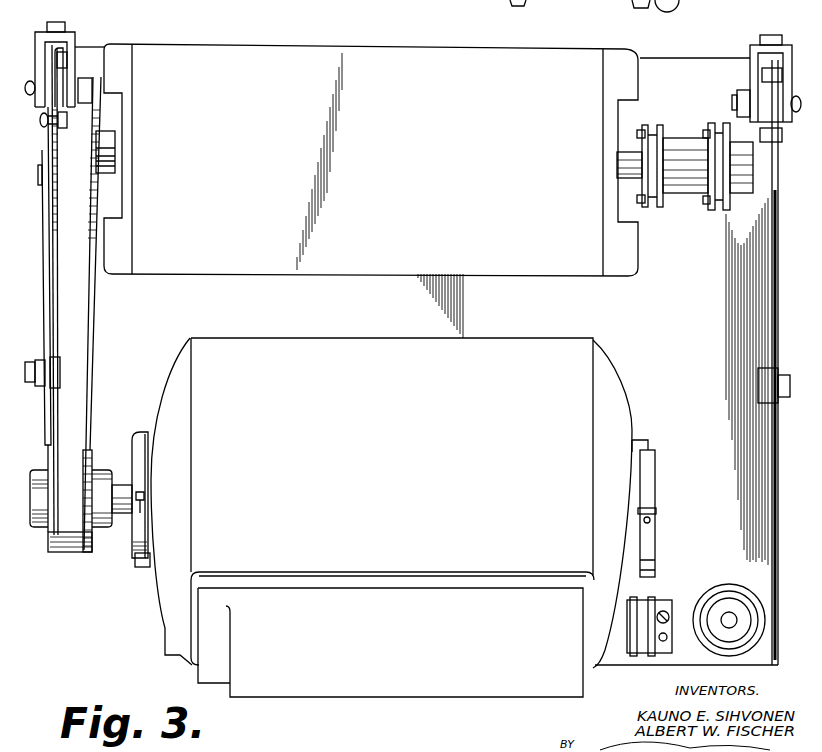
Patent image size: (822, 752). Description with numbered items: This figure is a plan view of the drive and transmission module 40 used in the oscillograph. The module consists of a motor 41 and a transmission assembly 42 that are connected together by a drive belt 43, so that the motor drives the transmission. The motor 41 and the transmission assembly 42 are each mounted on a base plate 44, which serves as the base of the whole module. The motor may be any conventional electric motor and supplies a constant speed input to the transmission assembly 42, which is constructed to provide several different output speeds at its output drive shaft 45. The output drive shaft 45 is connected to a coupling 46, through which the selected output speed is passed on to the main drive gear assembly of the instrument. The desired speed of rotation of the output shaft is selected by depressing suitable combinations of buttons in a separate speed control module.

The drive and transmission module 40 is at (658, 50).
The motor 41 is at (551, 403).
The transmission assembly 42 is at (214, 34).
The drive belt 43 is at (75, 315).
The base plate 44 is at (736, 425).
The output drive shaft 45 is at (628, 155).
The coupling 46 is at (668, 120).